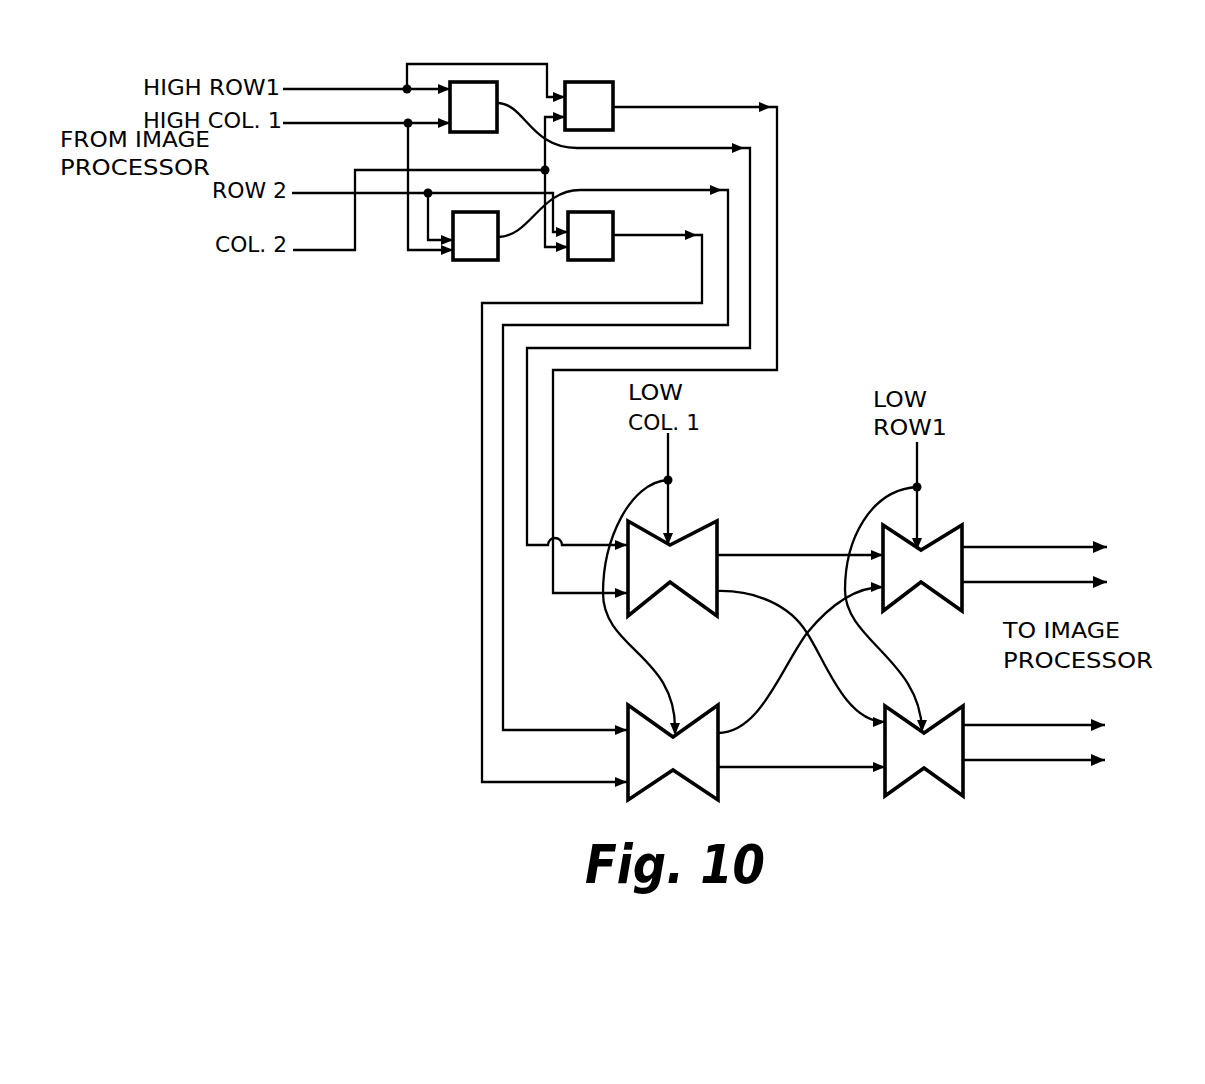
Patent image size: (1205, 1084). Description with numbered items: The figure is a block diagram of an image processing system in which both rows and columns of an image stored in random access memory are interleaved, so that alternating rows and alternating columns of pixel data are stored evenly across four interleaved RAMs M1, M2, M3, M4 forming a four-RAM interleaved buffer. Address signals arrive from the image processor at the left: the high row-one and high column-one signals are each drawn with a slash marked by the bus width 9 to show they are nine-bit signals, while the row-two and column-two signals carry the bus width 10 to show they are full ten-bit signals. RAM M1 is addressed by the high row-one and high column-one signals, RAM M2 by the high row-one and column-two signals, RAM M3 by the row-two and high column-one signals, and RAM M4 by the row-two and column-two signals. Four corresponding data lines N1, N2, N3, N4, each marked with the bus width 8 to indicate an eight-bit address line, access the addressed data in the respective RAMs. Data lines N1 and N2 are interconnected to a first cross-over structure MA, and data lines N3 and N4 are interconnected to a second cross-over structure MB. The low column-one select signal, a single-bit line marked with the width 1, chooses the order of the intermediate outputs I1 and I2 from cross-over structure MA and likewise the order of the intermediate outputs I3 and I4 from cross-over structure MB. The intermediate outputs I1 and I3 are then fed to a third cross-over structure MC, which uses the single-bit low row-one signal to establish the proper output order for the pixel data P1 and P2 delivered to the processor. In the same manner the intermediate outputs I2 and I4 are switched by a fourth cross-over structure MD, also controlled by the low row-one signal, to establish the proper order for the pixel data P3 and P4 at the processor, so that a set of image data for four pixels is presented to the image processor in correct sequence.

The nine-bit signal width 9 is at (333, 82).
The ten-bit signal width 10 is at (315, 202).
The eight-bit address line width 8 is at (657, 293).
The one-bit select signal width 1 is at (655, 460).
The interleaved RAM M1 is at (473, 107).
The interleaved RAM M2 is at (589, 106).
The interleaved RAM M3 is at (475, 236).
The interleaved RAM M4 is at (590, 236).
The eight-bit address line N1 is at (650, 150).
The eight-bit address line N2 is at (650, 108).
The eight-bit address line N3 is at (653, 192).
The eight-bit address line N4 is at (650, 235).
The cross-over structure MA is at (672, 568).
The cross-over structure MB is at (673, 752).
The cross-over structure MC is at (922, 568).
The cross-over structure MD is at (924, 751).
The intermediate output I1 is at (783, 553).
The intermediate output I2 is at (786, 586).
The intermediate output I3 is at (784, 667).
The intermediate output I4 is at (772, 765).
The pixel data P1 is at (1049, 545).
The pixel data P2 is at (1049, 582).
The pixel data P3 is at (1049, 724).
The pixel data P4 is at (1049, 760).